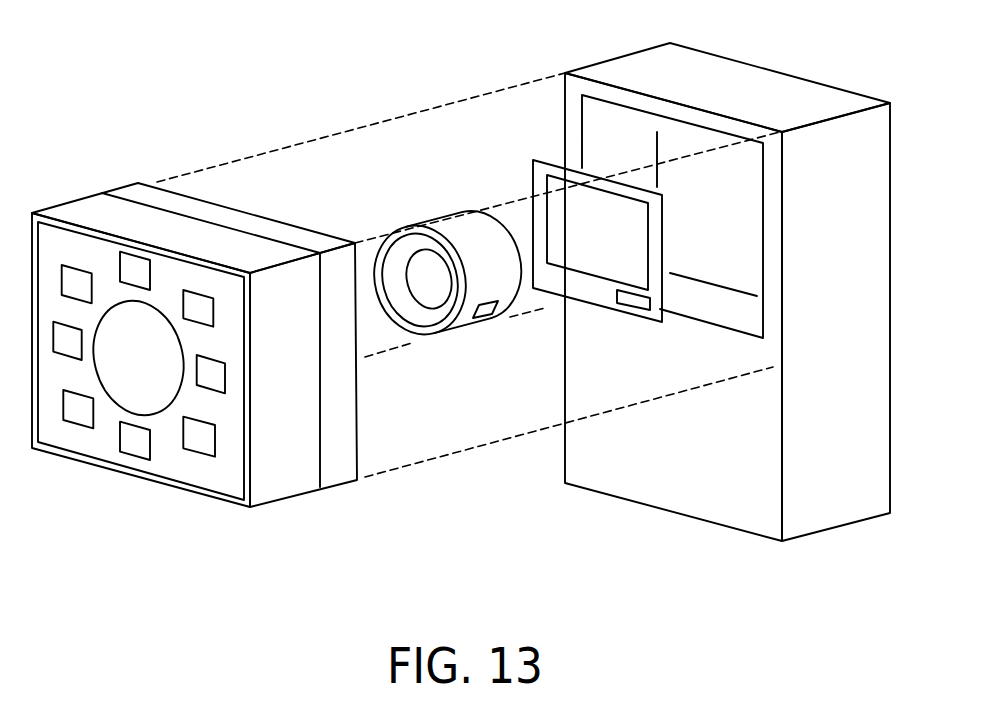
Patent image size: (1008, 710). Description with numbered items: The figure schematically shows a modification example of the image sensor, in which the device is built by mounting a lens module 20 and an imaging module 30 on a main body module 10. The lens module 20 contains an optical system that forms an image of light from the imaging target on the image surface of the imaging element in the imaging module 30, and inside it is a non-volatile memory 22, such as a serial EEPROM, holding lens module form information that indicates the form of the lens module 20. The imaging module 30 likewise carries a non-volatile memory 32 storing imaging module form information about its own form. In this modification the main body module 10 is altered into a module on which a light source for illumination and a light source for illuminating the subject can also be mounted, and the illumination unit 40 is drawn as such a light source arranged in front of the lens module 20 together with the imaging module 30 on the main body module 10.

The main body module 10 is at (777, 83).
The lens module 20 is at (437, 225).
The non-volatile memory 22 is at (485, 312).
The imaging module 30 is at (558, 172).
The non-volatile memory 32 is at (633, 305).
The light source unit 40 is at (120, 207).